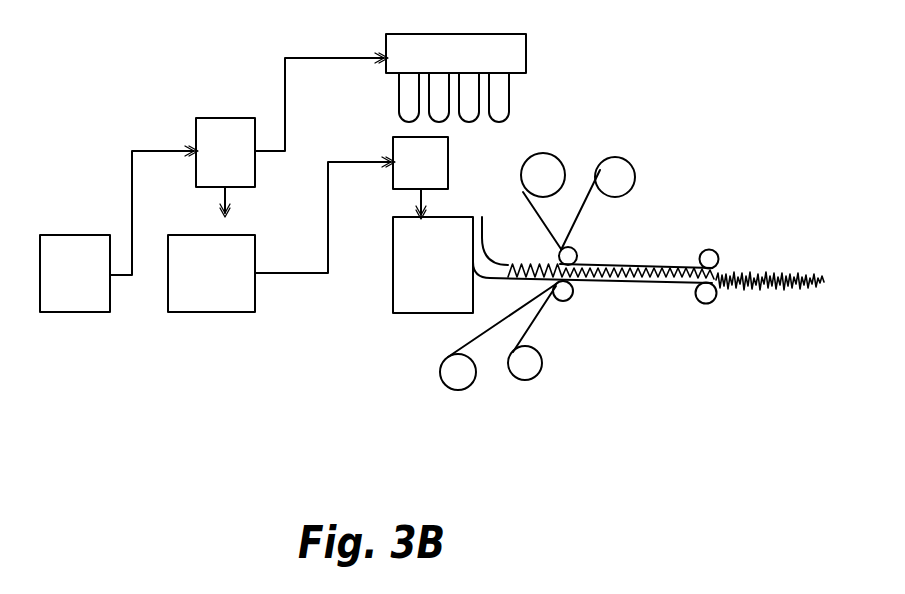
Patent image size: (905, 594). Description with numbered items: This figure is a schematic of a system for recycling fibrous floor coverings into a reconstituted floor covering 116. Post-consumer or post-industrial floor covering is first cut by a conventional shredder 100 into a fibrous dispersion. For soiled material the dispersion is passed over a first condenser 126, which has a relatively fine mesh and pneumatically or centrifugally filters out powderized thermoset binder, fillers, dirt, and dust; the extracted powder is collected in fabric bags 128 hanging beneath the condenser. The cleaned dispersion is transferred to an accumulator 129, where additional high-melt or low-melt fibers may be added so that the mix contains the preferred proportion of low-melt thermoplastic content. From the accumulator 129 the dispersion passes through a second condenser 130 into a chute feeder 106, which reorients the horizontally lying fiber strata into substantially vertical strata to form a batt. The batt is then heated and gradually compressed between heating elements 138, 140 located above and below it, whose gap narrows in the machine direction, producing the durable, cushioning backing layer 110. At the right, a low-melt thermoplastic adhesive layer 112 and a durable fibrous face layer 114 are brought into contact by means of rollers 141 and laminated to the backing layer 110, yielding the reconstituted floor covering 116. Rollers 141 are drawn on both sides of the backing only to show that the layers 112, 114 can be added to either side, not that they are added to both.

The shredder 100 is at (75, 273).
The chute feeder 106 is at (450, 265).
The backing layer 110 is at (630, 268).
The adhesive layer 112 is at (580, 197).
The face layer 114 is at (546, 212).
The reconstituted floor covering 116 is at (775, 293).
The first condenser 126 is at (225, 152).
The fabric bags 128 is at (456, 78).
The accumulator 129 is at (211, 273).
The second condenser 130 is at (420, 163).
The heating element 138 is at (652, 268).
The heating element 140 is at (623, 283).
The rollers 141 is at (574, 249).